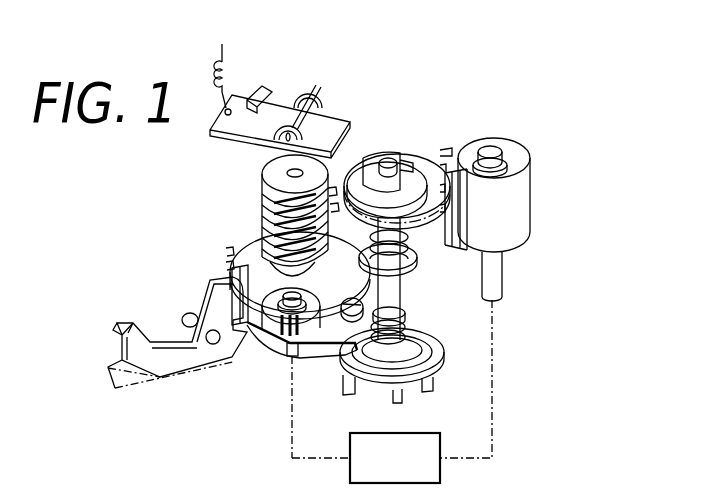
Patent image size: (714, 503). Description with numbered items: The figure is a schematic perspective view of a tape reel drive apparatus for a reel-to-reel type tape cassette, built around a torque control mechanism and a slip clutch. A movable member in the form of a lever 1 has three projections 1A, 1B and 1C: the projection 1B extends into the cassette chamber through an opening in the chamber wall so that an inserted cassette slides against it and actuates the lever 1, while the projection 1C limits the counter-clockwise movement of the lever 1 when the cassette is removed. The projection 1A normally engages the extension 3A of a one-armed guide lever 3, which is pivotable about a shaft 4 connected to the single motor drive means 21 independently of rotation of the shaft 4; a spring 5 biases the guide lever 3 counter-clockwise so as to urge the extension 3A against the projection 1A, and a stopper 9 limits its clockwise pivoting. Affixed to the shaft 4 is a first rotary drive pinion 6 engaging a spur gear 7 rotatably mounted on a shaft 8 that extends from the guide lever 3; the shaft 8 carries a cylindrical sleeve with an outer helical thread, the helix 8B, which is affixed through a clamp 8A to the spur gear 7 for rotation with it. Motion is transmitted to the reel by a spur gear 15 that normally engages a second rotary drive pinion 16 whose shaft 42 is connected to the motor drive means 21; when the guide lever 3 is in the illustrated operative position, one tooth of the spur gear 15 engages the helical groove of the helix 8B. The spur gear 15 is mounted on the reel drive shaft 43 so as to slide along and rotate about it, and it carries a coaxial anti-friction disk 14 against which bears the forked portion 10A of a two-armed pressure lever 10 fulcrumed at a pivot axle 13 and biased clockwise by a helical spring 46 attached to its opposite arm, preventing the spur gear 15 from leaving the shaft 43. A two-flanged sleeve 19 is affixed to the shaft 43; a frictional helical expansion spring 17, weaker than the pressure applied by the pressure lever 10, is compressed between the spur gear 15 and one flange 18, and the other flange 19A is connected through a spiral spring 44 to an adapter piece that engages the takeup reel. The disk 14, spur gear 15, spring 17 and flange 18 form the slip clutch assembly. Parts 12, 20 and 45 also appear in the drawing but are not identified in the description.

The lever 1 is at (212, 305).
The projection 1A is at (233, 295).
The projection 1B is at (170, 372).
The projection 1C is at (122, 327).
The one-armed guide lever 3 is at (312, 353).
The extension 3A is at (240, 332).
The shaft 4 is at (293, 358).
The spring 5 is at (322, 344).
The first rotary drive pinion 6 is at (278, 343).
The spur gear 7 is at (232, 256).
The shaft 8 is at (293, 172).
The clamp 8A is at (240, 245).
The helix 8B is at (262, 203).
The stopper 9 is at (370, 298).
The two-armed pressure lever 10 is at (326, 126).
The forked portion 10A is at (408, 163).
The tab 12 is at (265, 96).
The pivot axle 13 is at (314, 92).
The anti-friction disk 14 is at (415, 180).
The spur gear 15 is at (436, 167).
The second rotary drive pinion 16 is at (517, 192).
The frictional helical expansion spring 17 is at (405, 236).
The flange 18 is at (397, 298).
The two-flanged sleeve 19 is at (404, 318).
The other flange 19A is at (426, 340).
The base 20 is at (412, 382).
The motor drive means 21 is at (402, 472).
The shaft 42 is at (490, 150).
The reel drive shaft 43 is at (378, 163).
The spiral spring 44 is at (413, 360).
The button flange 45 is at (504, 162).
The helical spring 46 is at (227, 70).